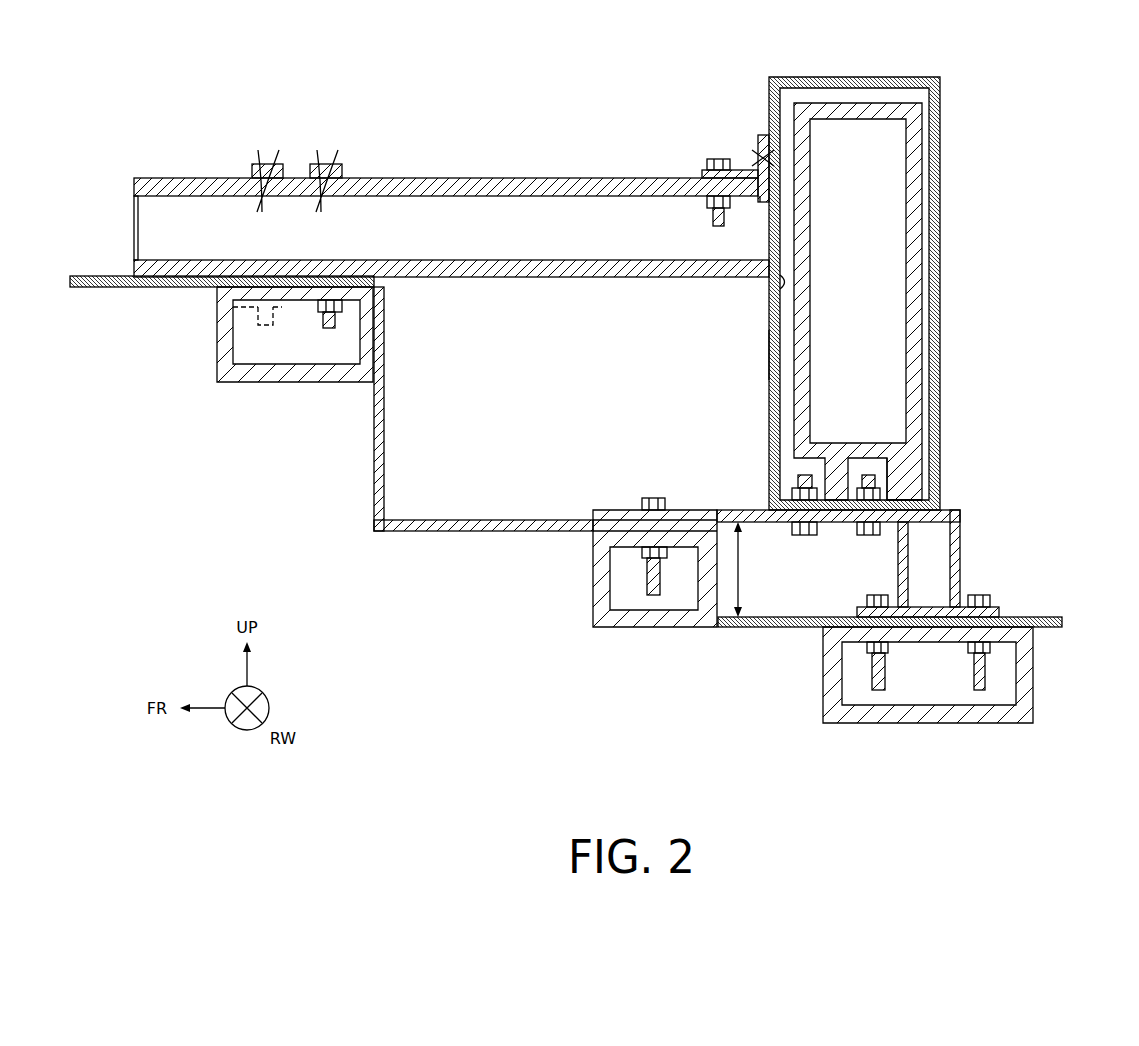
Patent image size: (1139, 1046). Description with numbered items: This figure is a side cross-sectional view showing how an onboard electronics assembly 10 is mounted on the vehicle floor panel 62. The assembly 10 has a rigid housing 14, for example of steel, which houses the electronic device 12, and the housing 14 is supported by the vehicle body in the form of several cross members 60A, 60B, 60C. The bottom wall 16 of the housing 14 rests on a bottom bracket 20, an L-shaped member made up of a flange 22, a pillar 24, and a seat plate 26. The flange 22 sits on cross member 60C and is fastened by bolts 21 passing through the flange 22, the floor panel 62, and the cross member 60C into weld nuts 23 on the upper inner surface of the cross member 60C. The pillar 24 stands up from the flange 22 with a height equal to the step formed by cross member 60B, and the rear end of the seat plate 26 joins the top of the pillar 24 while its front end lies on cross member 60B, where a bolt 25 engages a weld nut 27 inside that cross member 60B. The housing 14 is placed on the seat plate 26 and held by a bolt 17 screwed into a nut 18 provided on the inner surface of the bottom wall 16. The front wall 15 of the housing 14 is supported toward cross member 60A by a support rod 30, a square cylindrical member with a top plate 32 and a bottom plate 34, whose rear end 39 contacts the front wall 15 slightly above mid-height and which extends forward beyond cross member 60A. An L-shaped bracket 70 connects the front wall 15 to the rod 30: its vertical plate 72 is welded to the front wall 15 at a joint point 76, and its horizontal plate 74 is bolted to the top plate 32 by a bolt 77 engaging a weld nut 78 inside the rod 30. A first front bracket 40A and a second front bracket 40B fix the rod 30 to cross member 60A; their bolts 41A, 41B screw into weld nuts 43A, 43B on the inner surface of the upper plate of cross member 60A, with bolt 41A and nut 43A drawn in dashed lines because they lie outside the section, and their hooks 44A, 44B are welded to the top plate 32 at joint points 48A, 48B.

The onboard electronics assembly 10 is at (866, 300).
The electronic device 12 is at (892, 185).
The housing 14 is at (938, 132).
The front wall 15 is at (768, 355).
The bottom wall 16 is at (910, 500).
The bolt 17 is at (810, 535).
The nut 18 is at (792, 495).
The bottom bracket 20 is at (834, 541).
The bolt 21 is at (883, 680).
The flange 22 is at (963, 575).
The nut 23 is at (863, 647).
The pillar 24 is at (962, 550).
The bolt 25 is at (665, 573).
The seat plate 26 is at (605, 510).
The nut 27 is at (638, 552).
The support rod 30 is at (419, 301).
The top plate 32 is at (510, 178).
The bottom plate 34 is at (548, 277).
The rear end 39 is at (770, 305).
The first front bracket 40A is at (232, 141).
The second front bracket 40B is at (370, 141).
The bolt 41A is at (215, 345).
The bolt 41B is at (326, 330).
The nut 43A is at (215, 310).
The nut 43B is at (318, 303).
The hook 44A is at (250, 172).
The hook 44B is at (344, 172).
The joint point 48A is at (267, 190).
The joint point 48B is at (326, 190).
The cross member 60A is at (260, 368).
The cross member 60B is at (629, 600).
The cross member 60C is at (934, 683).
The floor panel 62 is at (458, 520).
The L-shaped bracket 70 is at (704, 156).
The vertical plate 72 is at (767, 133).
The horizontal plate 74 is at (702, 175).
The joint point 76 is at (748, 213).
The bolt 77 is at (718, 226).
The nut 78 is at (705, 202).